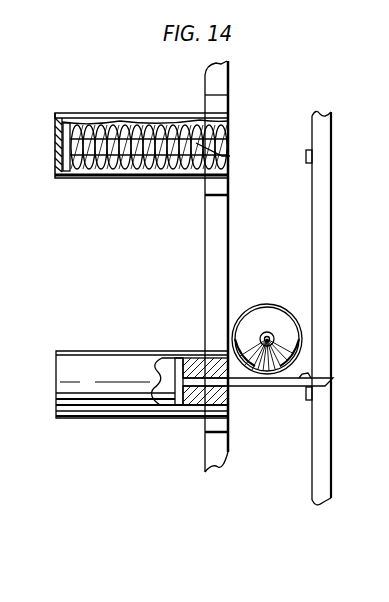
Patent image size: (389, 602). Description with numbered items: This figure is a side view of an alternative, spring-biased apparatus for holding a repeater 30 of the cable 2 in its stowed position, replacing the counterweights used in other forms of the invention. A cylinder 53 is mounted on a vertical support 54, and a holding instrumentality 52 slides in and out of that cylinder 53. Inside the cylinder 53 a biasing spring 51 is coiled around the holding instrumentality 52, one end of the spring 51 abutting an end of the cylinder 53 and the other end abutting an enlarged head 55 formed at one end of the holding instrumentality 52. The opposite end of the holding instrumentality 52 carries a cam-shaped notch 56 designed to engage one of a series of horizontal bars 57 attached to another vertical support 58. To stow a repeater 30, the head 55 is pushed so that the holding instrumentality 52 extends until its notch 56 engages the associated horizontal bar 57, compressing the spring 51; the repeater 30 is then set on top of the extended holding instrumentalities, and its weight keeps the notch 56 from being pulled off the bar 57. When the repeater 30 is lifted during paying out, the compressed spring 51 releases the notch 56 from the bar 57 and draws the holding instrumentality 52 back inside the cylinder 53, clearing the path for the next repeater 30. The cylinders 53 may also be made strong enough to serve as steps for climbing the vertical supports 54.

The cable 2 is at (275, 337).
The repeater 30 is at (276, 311).
The biasing spring 51 is at (120, 165).
The holding instrumentality 52 is at (246, 387).
The cylinder 53 is at (80, 360).
The vertical support 54 is at (212, 84).
The enlarged head 55 is at (66, 125).
The cam-shaped notch 56 is at (230, 156).
The horizontal bar 57 is at (305, 155).
The vertical support 58 is at (322, 204).